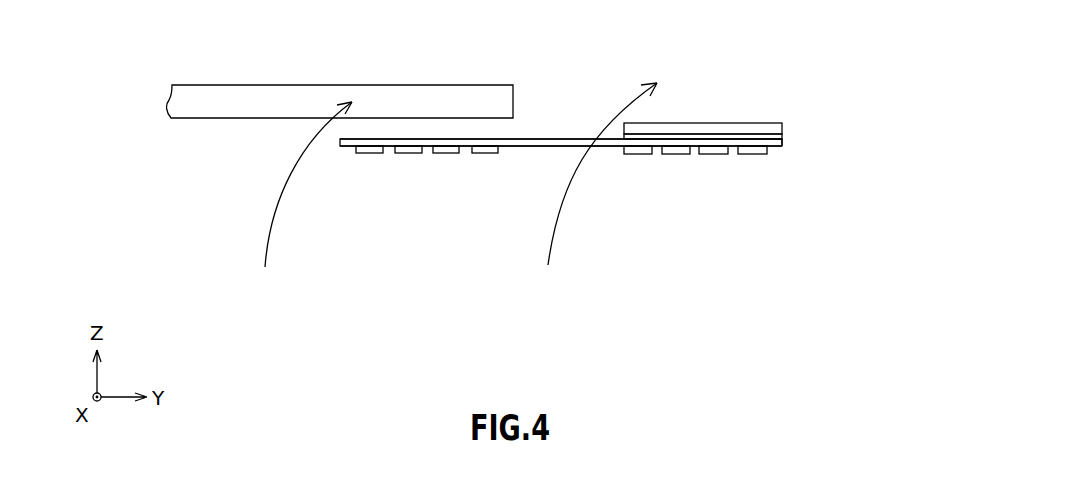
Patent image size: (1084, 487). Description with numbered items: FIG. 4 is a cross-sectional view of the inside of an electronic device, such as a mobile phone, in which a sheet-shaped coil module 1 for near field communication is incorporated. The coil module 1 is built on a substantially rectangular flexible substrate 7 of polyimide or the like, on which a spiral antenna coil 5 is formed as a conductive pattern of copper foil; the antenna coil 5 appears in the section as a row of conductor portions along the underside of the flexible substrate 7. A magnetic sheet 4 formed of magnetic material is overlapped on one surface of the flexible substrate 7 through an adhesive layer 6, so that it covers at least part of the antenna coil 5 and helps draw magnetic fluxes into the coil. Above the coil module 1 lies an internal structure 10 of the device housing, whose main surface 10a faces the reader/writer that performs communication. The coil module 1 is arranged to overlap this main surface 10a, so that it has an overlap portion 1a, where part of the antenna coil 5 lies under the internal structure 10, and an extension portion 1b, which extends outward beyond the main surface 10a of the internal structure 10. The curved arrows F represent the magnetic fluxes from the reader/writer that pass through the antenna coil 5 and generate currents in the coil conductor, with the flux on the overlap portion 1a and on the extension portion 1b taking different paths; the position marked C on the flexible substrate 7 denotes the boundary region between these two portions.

The coil module 1 is at (788, 158).
The overlap portion 1a is at (428, 146).
The extension portion 1b is at (573, 139).
The magnetic sheet 4 is at (781, 131).
The antenna coil 5 is at (372, 153).
The adhesive layer 6 is at (782, 136).
The flexible substrate 7 is at (786, 142).
The internal structure 10 is at (513, 101).
The main surface 10a is at (208, 118).
The center position C is at (543, 146).
The magnetic fluxes F is at (457, 190).